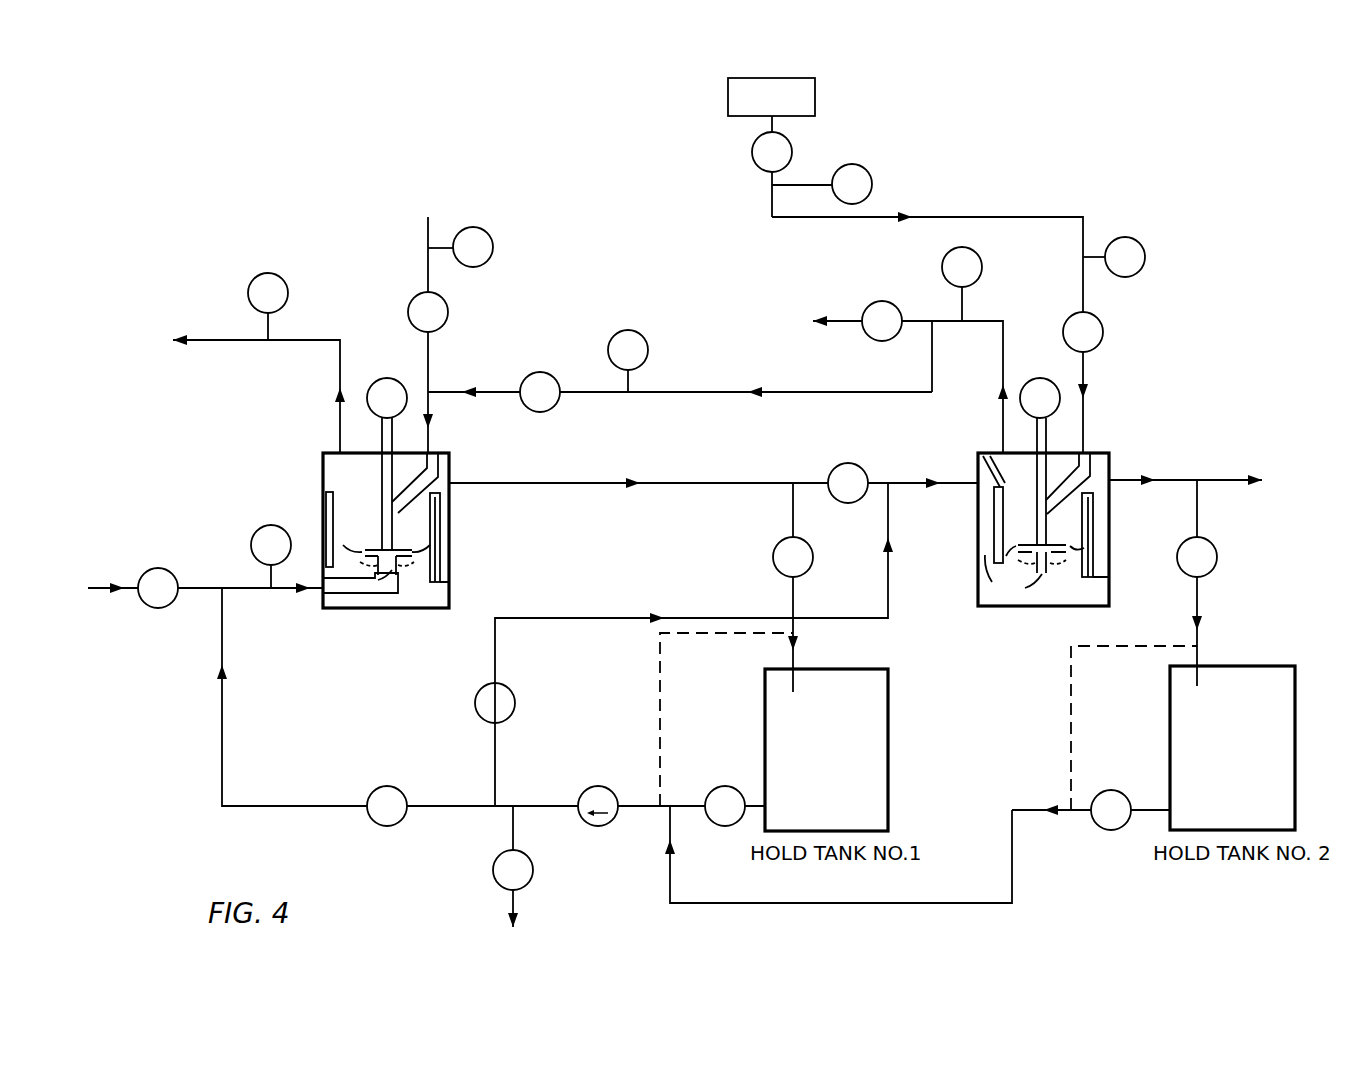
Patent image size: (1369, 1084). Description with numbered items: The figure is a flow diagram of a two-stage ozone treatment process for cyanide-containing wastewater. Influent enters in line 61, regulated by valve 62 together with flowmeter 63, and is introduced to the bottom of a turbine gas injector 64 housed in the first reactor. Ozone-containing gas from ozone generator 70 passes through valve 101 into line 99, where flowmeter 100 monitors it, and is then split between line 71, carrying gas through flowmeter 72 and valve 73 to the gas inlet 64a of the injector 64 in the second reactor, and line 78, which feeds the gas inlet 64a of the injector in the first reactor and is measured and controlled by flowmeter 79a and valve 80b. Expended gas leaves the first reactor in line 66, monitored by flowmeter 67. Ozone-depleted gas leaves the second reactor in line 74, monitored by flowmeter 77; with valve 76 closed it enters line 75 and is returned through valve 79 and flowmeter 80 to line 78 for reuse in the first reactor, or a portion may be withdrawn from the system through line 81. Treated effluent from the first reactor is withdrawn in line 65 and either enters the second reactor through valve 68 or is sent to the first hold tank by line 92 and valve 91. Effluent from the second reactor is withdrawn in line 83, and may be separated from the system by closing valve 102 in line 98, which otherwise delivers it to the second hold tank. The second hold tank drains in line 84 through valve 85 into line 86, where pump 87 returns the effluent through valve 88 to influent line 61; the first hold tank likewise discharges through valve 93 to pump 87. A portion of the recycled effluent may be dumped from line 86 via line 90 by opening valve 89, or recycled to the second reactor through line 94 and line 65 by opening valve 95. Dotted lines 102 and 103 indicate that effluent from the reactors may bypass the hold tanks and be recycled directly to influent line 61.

The influent line 61 is at (100, 588).
The valve 62 is at (158, 567).
The flowmeter 63 is at (258, 528).
The turbine gas injector 64 is at (372, 468).
The gas inlet 64a is at (435, 465).
The line 65 is at (565, 480).
The line 66 is at (308, 340).
The flowmeter 67 is at (268, 273).
The valve 68 is at (848, 462).
The ozone generator 70 is at (815, 101).
The line 71 is at (1013, 217).
The flowmeter 72 is at (1145, 257).
The valve 73 is at (1103, 336).
The line 74 is at (996, 320).
The line 75 is at (932, 360).
The valve 76 is at (882, 301).
The flowmeter 77 is at (978, 256).
The line 78 is at (428, 232).
The valve 79 is at (540, 372).
The flowmeter 79a is at (493, 248).
The flowmeter 80 is at (628, 330).
The valve 80b is at (448, 312).
The line 81 is at (838, 318).
The line 83 is at (1180, 480).
The line 84 is at (1012, 870).
The valve 85 is at (1111, 790).
The line 86 is at (440, 806).
The pump 87 is at (598, 786).
The valve 88 is at (385, 786).
The valve 89 is at (533, 870).
The line 90 is at (513, 833).
The valve 91 is at (813, 557).
The line 92 is at (793, 505).
The valve 93 is at (725, 786).
The line 94 is at (540, 617).
The valve 95 is at (515, 703).
The line 98 is at (1197, 515).
The line 99 is at (770, 194).
The flowmeter 100 is at (872, 186).
The valve 101 is at (792, 155).
The valve / dotted line 102 is at (1217, 560).
The dotted line 103 is at (1071, 700).